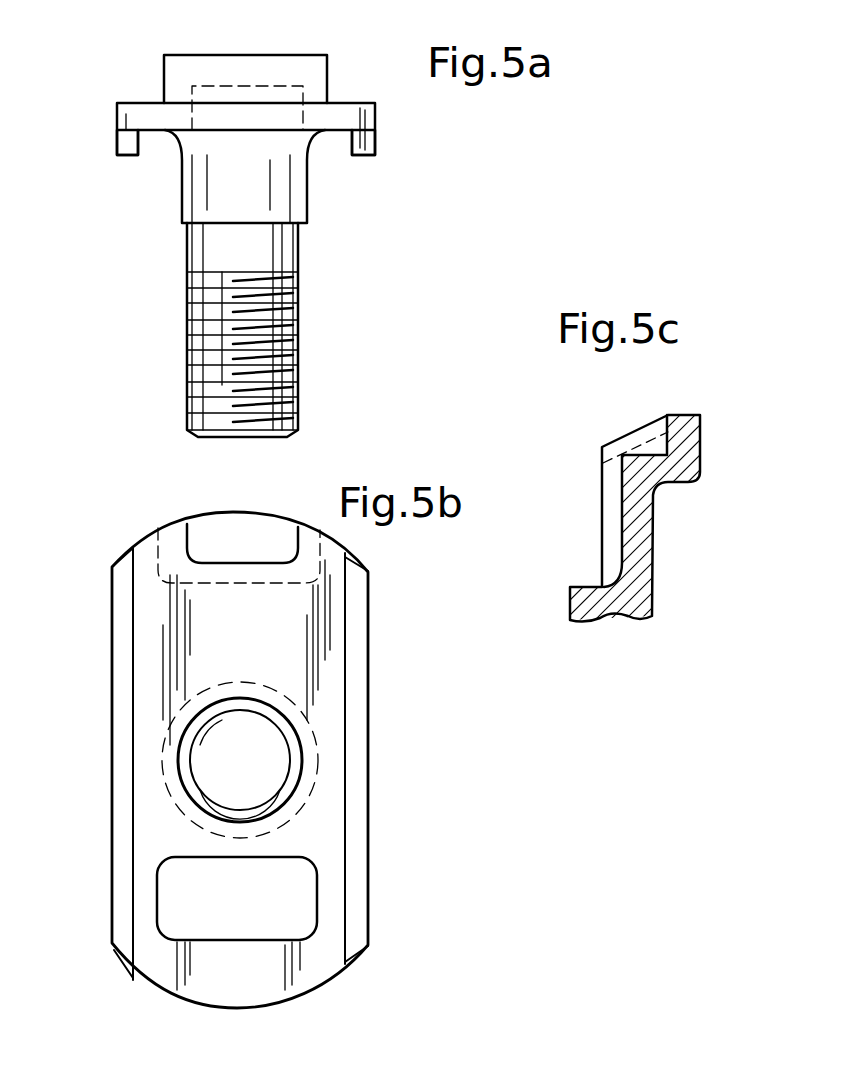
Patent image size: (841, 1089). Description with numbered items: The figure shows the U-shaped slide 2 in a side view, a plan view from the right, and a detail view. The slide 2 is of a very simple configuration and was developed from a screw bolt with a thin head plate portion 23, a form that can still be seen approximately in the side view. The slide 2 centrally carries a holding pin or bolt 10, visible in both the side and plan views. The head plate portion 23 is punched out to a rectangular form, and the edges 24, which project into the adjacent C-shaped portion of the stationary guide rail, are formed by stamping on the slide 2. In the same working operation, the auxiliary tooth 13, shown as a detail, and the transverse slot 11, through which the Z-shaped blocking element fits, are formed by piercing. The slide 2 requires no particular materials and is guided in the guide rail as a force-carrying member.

In FIG. 5a, the slide 2 is at (320, 253).
In FIG. 5b, the slide 2 is at (94, 624).
In FIG. 5a, the holding pin or bolt 10 is at (298, 352).
In FIG. 5b, the holding pin or bolt 10 is at (270, 745).
In FIG. 5b, the transverse slot 11 is at (178, 920).
In FIG. 5a, the auxiliary tooth 13 is at (253, 64).
In FIG. 5b, the auxiliary tooth 13 is at (212, 538).
In FIG. 5c, the auxiliary tooth 13 is at (682, 437).
In FIG. 5a, the head plate portion 23 is at (355, 117).
In FIG. 5b, the head plate portion 23 is at (313, 835).
In FIG. 5a, the edges 24 is at (123, 145).